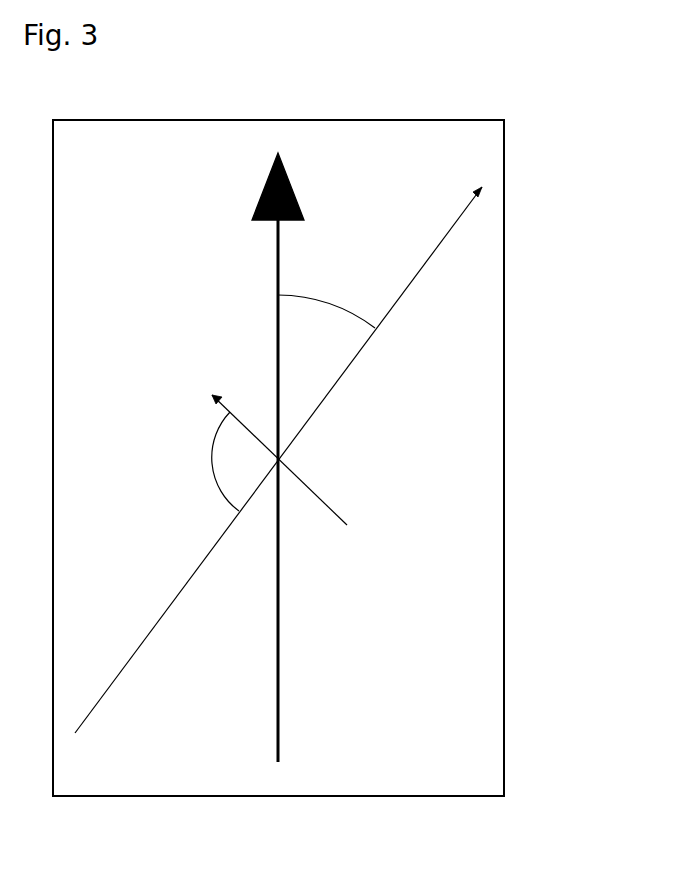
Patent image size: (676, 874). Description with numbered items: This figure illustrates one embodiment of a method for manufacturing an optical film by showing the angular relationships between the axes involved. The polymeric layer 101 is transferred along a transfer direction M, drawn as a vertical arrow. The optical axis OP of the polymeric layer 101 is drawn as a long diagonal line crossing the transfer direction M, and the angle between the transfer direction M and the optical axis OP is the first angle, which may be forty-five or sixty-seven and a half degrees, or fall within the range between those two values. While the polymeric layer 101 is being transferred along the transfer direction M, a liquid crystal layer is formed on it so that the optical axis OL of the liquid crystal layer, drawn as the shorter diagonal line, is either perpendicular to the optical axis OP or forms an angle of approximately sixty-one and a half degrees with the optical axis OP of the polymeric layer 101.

The polymeric layer 101 is at (504, 732).
The transfer direction M is at (279, 720).
The optical axis of the polymeric layer OP is at (128, 662).
The optical axis of the liquid crystal layer OL is at (318, 497).